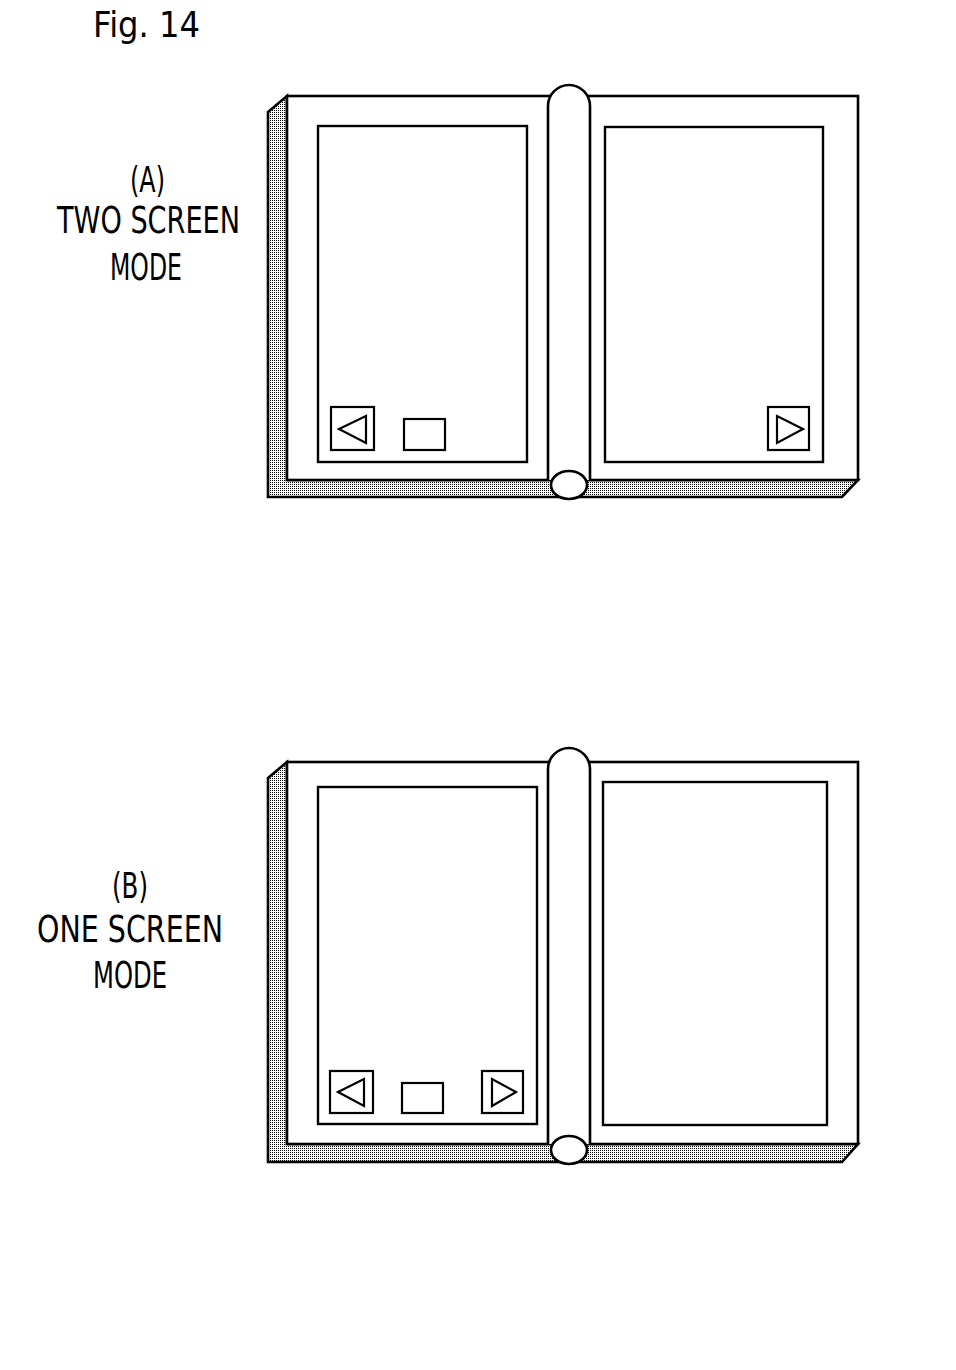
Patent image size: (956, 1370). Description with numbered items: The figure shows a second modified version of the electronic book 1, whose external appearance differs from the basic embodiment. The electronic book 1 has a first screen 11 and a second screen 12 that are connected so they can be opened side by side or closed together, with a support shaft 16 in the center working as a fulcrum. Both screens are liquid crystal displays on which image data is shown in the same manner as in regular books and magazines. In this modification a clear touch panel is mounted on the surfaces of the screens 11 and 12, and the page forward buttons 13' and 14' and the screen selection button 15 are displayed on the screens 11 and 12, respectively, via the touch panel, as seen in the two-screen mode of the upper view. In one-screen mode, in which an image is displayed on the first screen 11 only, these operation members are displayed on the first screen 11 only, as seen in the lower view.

The electronic book 1 is at (603, 82).
The first screen 11 is at (437, 305).
The second screen 12 is at (728, 305).
The page forward button 13' is at (321, 812).
The page forward button 14' is at (629, 805).
The screen selection button 15 is at (423, 450).
The support shaft 16 is at (568, 500).